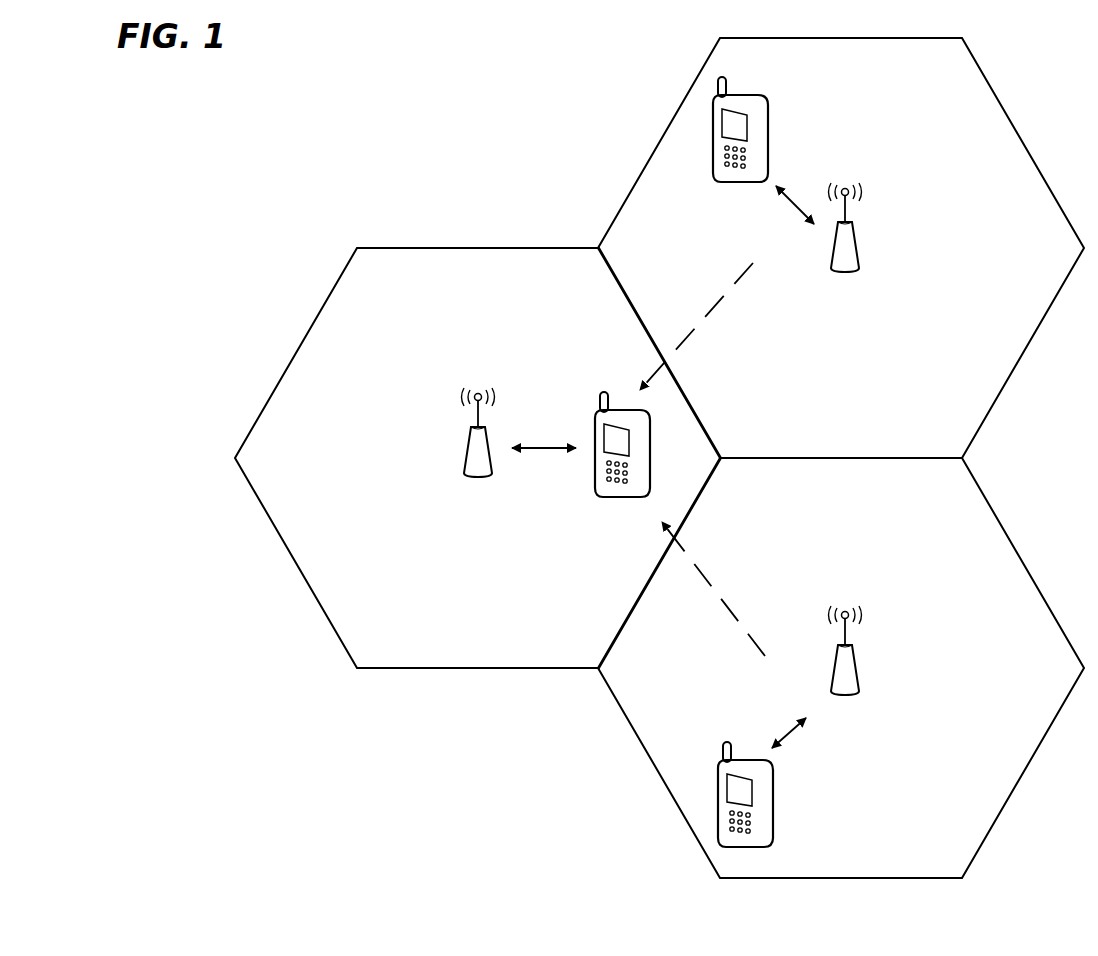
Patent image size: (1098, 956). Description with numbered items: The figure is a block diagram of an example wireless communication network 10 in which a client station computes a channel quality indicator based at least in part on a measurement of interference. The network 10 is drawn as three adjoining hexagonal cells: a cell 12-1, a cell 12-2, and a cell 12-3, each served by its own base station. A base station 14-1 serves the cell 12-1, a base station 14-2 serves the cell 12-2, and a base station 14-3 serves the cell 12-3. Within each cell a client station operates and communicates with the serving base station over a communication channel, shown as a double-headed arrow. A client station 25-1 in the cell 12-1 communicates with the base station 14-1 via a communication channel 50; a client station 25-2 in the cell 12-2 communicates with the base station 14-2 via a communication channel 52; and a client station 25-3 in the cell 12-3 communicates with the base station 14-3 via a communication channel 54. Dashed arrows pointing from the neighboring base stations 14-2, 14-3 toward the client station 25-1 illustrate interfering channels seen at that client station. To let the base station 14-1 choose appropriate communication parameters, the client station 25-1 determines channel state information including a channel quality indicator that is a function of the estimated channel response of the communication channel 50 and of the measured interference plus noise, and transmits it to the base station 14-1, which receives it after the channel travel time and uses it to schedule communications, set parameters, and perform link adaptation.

The wireless communication network 10 is at (597, 110).
The cell 12-1 is at (321, 310).
The cell 12-2 is at (1023, 350).
The cell 12-3 is at (1016, 548).
The base station 14-1 is at (470, 440).
The base station 14-2 is at (858, 246).
The base station 14-3 is at (858, 670).
The client station 25-1 is at (652, 435).
The client station 25-2 is at (768, 122).
The client station 25-3 is at (773, 788).
The communication channel 50 is at (548, 450).
The communication channel 52 is at (797, 197).
The communication channel 54 is at (788, 732).